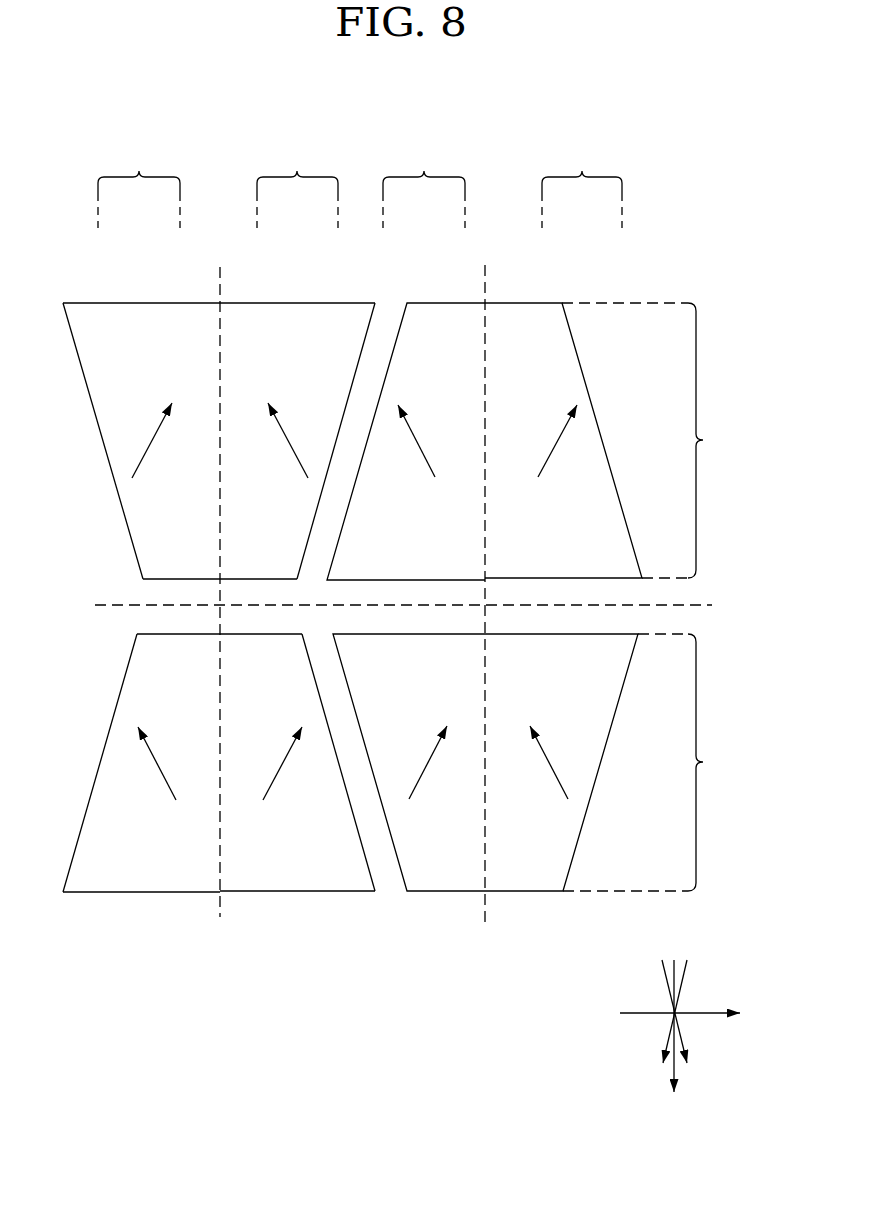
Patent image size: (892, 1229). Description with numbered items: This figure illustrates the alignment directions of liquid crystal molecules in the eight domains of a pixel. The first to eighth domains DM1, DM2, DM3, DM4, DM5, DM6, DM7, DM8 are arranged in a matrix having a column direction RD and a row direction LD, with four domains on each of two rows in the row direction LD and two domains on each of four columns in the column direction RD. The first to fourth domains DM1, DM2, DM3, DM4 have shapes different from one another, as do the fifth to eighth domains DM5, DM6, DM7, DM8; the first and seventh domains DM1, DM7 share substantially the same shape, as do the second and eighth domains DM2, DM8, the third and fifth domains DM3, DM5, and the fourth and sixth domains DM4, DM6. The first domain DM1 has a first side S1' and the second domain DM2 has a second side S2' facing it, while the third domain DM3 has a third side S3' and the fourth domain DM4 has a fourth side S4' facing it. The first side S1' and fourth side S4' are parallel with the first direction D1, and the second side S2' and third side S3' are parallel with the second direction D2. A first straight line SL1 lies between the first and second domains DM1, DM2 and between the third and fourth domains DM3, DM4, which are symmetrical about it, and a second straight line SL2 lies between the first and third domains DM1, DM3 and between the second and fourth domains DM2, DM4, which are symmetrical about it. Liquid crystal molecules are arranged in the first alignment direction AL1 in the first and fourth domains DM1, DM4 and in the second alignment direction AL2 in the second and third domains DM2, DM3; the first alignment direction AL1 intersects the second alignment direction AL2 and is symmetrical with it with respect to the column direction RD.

The first straight line SL1 is at (219, 273).
The second straight line SL2 is at (424, 606).
The first side S1' is at (100, 441).
The second side S2' is at (351, 413).
The third side S3' is at (97, 763).
The fourth side S4' is at (349, 801).
The first alignment direction AL1 is at (153, 430).
The second alignment direction AL2 is at (288, 440).
The first domain DM1 is at (183, 520).
The second domain DM2 is at (291, 520).
The third domain DM3 is at (163, 860).
The fourth domain DM4 is at (312, 860).
The fifth domain DM5 is at (423, 520).
The sixth domain DM6 is at (576, 520).
The seventh domain DM7 is at (449, 860).
The eighth domain DM8 is at (555, 860).
The row direction LD is at (695, 1013).
The column direction RD is at (676, 1074).
The first direction D1 is at (688, 1045).
The second direction D2 is at (664, 1045).